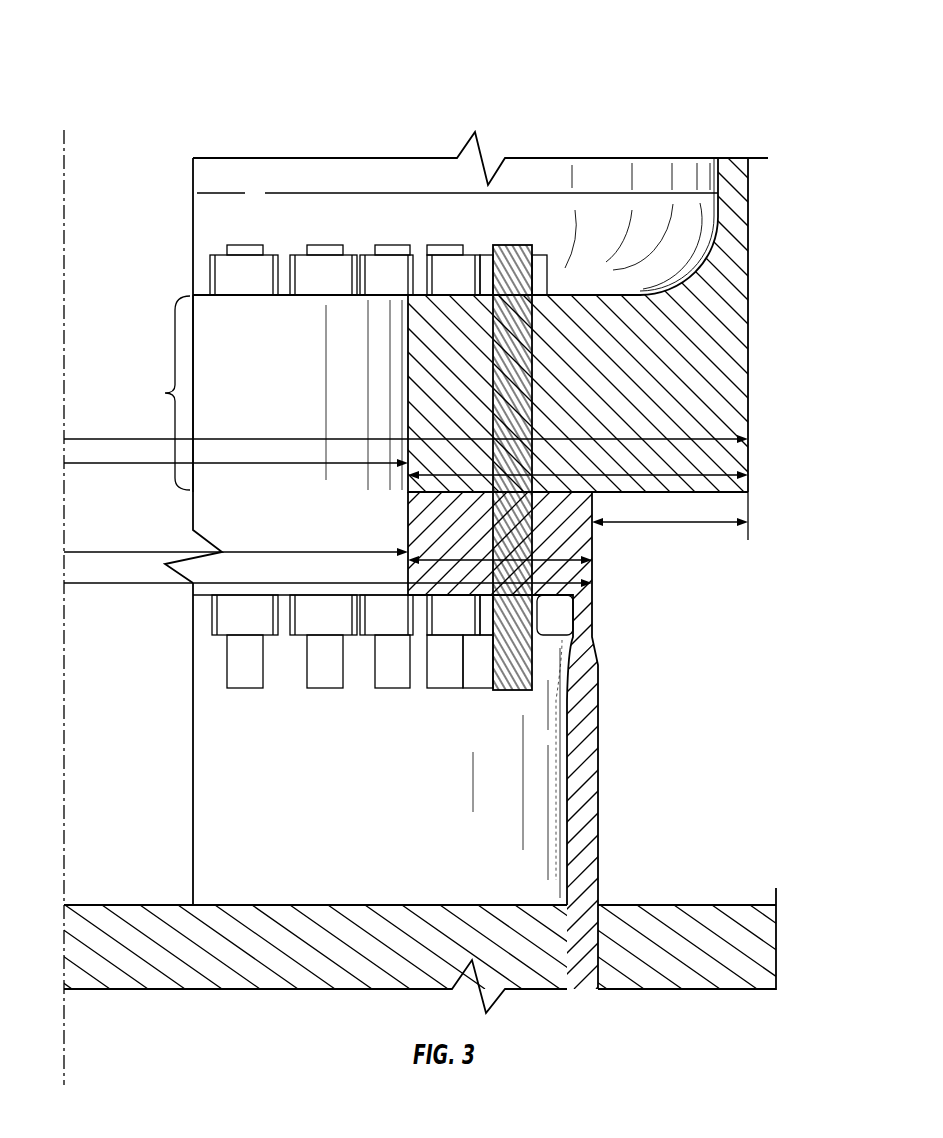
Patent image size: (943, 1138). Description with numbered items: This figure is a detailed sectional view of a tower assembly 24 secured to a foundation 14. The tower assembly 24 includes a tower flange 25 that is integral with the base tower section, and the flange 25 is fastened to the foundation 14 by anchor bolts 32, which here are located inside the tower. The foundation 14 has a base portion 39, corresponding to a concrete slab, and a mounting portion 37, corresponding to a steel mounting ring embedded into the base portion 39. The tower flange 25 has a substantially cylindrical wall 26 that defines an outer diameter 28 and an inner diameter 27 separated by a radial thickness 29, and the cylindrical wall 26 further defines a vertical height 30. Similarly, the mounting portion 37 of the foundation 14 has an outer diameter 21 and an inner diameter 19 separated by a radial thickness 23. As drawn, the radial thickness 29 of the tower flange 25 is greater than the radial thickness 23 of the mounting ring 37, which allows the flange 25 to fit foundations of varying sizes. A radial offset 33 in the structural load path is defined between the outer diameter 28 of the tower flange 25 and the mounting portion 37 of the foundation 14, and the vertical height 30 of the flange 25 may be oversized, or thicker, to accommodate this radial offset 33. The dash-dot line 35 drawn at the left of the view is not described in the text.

The foundation 14 is at (732, 780).
The inner diameter 19 is at (323, 552).
The outer diameter 21 is at (166, 586).
The radial thickness 23 is at (592, 542).
The tower assembly 24 is at (775, 116).
The tower flange 25 is at (756, 305).
The cylindrical wall 26 is at (750, 210).
The inner diameter 27 is at (150, 465).
The outer diameter 28 is at (143, 438).
The radial thickness 29 is at (711, 475).
The vertical height 30 is at (165, 393).
The anchor bolts 32 is at (412, 333).
The radial offset 33 is at (697, 523).
The centerline axis 35 is at (64, 797).
The mounting portion 37 is at (600, 700).
The base portion 39 is at (650, 905).